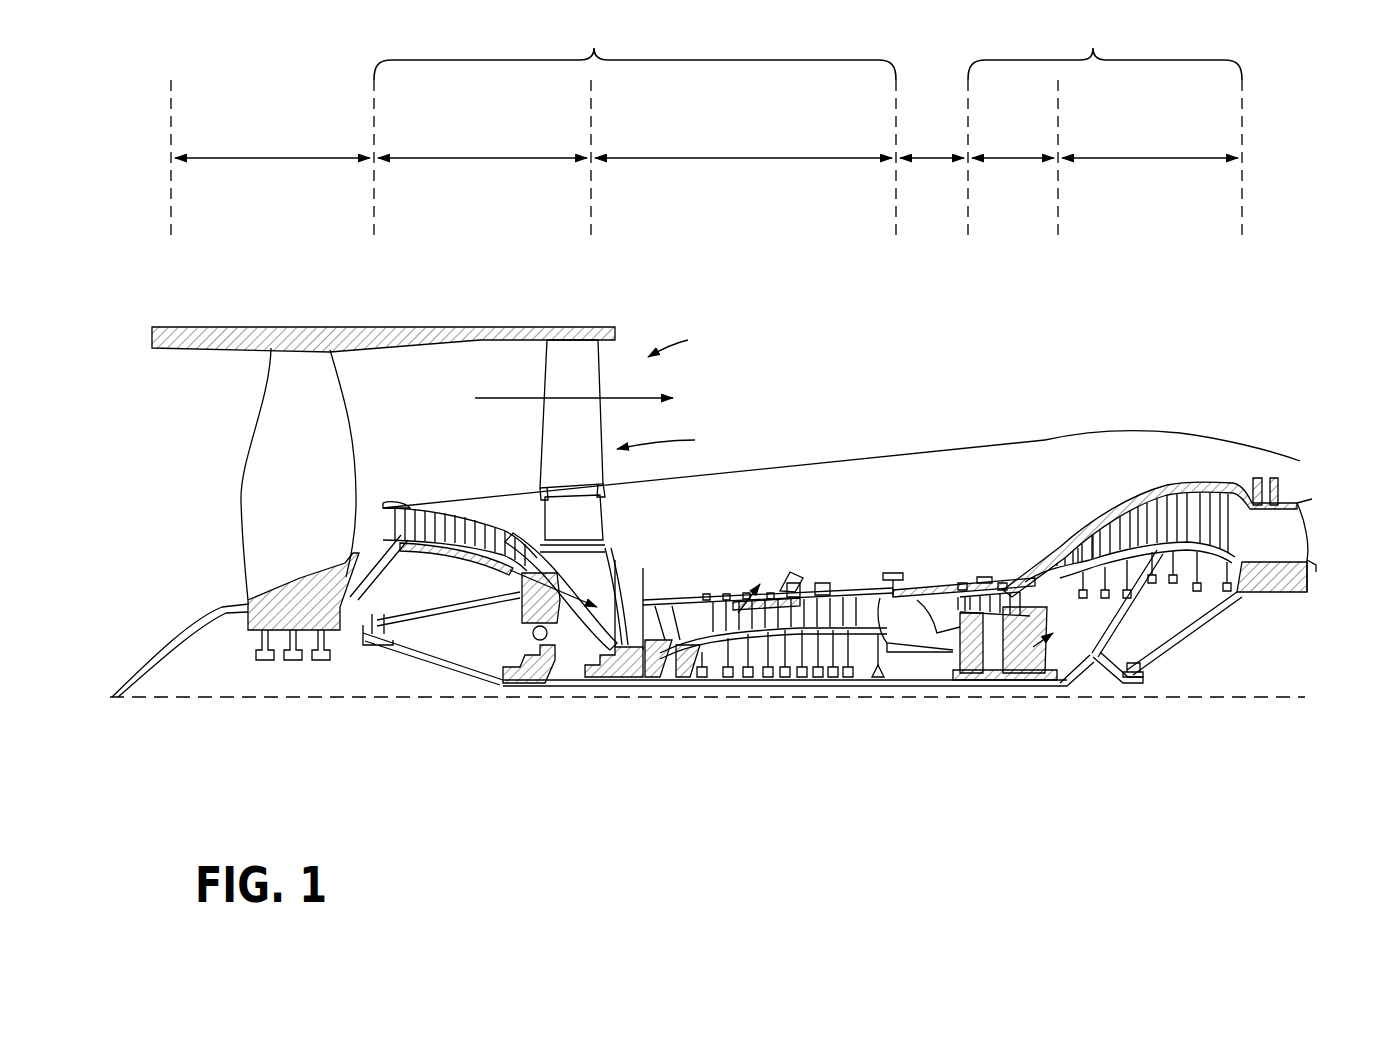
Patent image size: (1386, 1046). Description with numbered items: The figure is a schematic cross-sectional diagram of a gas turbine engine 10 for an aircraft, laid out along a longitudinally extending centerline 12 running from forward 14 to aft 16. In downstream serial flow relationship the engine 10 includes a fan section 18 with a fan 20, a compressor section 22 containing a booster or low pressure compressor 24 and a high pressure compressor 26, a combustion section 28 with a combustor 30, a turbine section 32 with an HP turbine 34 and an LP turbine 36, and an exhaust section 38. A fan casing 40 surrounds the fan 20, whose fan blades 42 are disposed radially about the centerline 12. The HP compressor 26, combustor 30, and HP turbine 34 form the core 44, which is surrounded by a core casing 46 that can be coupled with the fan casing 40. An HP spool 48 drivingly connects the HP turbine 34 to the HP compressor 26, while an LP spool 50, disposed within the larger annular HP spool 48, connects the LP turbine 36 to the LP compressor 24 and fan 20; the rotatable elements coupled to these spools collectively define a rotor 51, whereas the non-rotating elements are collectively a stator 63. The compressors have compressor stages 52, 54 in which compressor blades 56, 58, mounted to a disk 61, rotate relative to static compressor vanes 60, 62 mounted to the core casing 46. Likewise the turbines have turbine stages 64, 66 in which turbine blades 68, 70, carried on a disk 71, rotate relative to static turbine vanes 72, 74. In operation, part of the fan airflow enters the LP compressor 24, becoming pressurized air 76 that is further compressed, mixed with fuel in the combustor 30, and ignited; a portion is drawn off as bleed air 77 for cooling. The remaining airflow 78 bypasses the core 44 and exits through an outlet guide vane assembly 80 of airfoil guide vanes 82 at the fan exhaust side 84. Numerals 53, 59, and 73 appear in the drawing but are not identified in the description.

The gas turbine engine 10 is at (925, 319).
The centerline 12 is at (275, 700).
The forward 14 is at (118, 463).
The aft 16 is at (1331, 545).
The fan section 18 is at (272, 160).
The fan 20 is at (208, 538).
The compressor section 22 is at (635, 49).
The low pressure compressor 24 is at (484, 160).
The high pressure compressor 26 is at (745, 160).
The combustion section 28 is at (934, 160).
The combustor 30 is at (913, 587).
The turbine section 32 is at (1105, 49).
The HP turbine 34 is at (1015, 160).
The LP turbine 36 is at (1152, 160).
The exhaust section 38 is at (1320, 500).
The fan casing 40 is at (291, 338).
The fan blades 42 is at (328, 404).
The core 44 is at (877, 498).
The core casing 46 is at (1192, 483).
The HP spool 48 is at (908, 662).
The LP spool 50 is at (523, 687).
The rotor 51 is at (477, 560).
The compressor stages of the LP compressor 52 is at (451, 488).
The turbine rear frame strut 53 is at (1060, 663).
The compressor stages of the HP compressor 54 is at (648, 507).
The compressor blades of the LP compressor 56 is at (417, 494).
The compressor blades of the HP compressor 58 is at (660, 640).
The inner flowpath wall 59 is at (407, 553).
The static compressor vanes of the LP compressor 60 is at (394, 510).
The disk 61 is at (663, 668).
The static compressor vanes of the HP compressor 62 is at (647, 615).
The stator 63 is at (647, 680).
The turbine stages of the HP turbine 64 is at (994, 543).
The turbine stages of the LP turbine 66 is at (1150, 518).
The turbine blades of the HP turbine 68 is at (963, 590).
The turbine blades of the LP turbine 70 is at (1097, 515).
The disk 71 is at (978, 624).
The static turbine vanes of the HP turbine 72 is at (957, 598).
The turbine frame 73 is at (1067, 577).
The static turbine vanes of the LP turbine 74 is at (1080, 588).
The pressurized air 76 is at (587, 585).
The bleed air 77 is at (748, 592).
The airflow 78 is at (506, 395).
The outlet guide vane assembly 80 is at (674, 438).
The airfoil guide vanes 82 is at (552, 436).
The fan exhaust side 84 is at (683, 340).